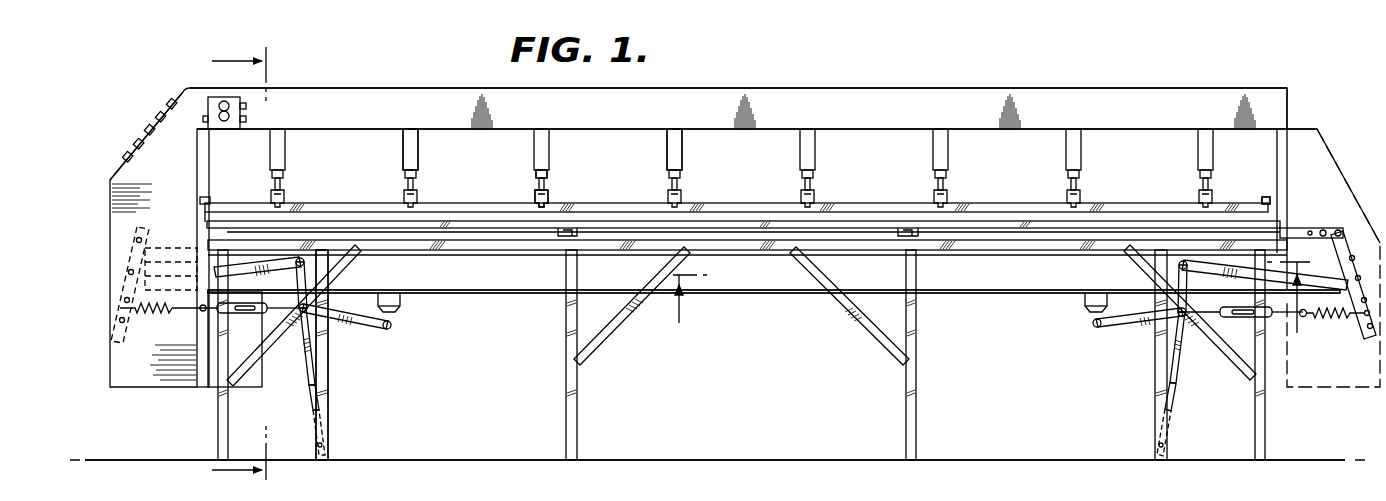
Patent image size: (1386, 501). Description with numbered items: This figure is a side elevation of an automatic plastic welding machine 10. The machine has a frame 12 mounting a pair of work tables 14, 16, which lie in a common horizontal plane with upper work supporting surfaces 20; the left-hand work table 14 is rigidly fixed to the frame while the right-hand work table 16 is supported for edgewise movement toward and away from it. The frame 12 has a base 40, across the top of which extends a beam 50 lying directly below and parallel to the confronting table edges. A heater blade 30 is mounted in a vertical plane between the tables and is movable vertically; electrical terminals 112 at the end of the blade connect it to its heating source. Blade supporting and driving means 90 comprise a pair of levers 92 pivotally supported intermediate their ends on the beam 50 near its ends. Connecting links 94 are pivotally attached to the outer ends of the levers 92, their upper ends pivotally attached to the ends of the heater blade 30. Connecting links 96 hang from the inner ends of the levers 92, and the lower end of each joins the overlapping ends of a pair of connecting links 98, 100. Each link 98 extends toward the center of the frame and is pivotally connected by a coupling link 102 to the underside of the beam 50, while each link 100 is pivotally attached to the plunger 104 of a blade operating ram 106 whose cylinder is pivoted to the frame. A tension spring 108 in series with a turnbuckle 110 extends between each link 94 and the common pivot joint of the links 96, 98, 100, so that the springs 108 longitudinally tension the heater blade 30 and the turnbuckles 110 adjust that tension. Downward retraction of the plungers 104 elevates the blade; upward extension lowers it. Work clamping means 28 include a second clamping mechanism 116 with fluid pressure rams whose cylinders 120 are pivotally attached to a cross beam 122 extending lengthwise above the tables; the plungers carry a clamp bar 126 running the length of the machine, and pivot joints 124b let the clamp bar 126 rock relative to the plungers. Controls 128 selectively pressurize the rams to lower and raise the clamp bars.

The automatic plastic welding machine 10 is at (1318, 106).
The frame 12 is at (520, 260).
The left-hand work table 14 is at (1030, 496).
The right-hand work table 16 is at (720, 224).
The upper work supporting surfaces 20 is at (857, 222).
The work clamping means 28 is at (686, 158).
The heater blade 30 is at (1292, 214).
The base 40 is at (332, 370).
The beam 50 is at (764, 274).
The blade supporting and driving means 90 is at (358, 334).
The levers 92 is at (1326, 268).
The connecting links 94 is at (1367, 338).
The connecting links 96 is at (312, 272).
The connecting links 98 is at (395, 322).
The connecting links 100 is at (302, 345).
The coupling link 102 is at (400, 314).
The plunger 104 is at (312, 392).
The blade operating ram 106 is at (313, 422).
The tension spring 108 is at (134, 338).
The turnbuckle 110 is at (213, 315).
The electrical terminals 112 is at (1350, 226).
The second clamping mechanism 116 is at (288, 151).
The cylinders 120 is at (420, 153).
The cross beam 122 is at (712, 95).
The pivot joints 124b is at (549, 190).
The clamp bar 126 is at (499, 194).
The controls 128 is at (230, 118).